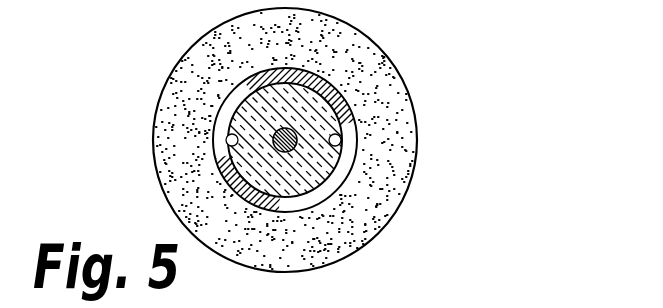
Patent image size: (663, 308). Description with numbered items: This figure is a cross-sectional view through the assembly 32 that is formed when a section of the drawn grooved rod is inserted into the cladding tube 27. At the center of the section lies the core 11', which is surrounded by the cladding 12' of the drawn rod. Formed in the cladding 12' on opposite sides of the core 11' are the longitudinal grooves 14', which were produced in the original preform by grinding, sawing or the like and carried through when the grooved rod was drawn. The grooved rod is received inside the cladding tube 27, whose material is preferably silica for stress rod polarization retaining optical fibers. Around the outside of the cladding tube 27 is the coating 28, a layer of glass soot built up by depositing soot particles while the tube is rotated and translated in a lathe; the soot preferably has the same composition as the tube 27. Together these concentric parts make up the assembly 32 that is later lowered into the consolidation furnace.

The assembly 32 is at (183, 53).
The coating 28 is at (405, 162).
The cladding tube 27 is at (223, 115).
The cladding 12' is at (334, 110).
The core 11' is at (299, 140).
The longitudinal grooves 14' is at (165, 144).